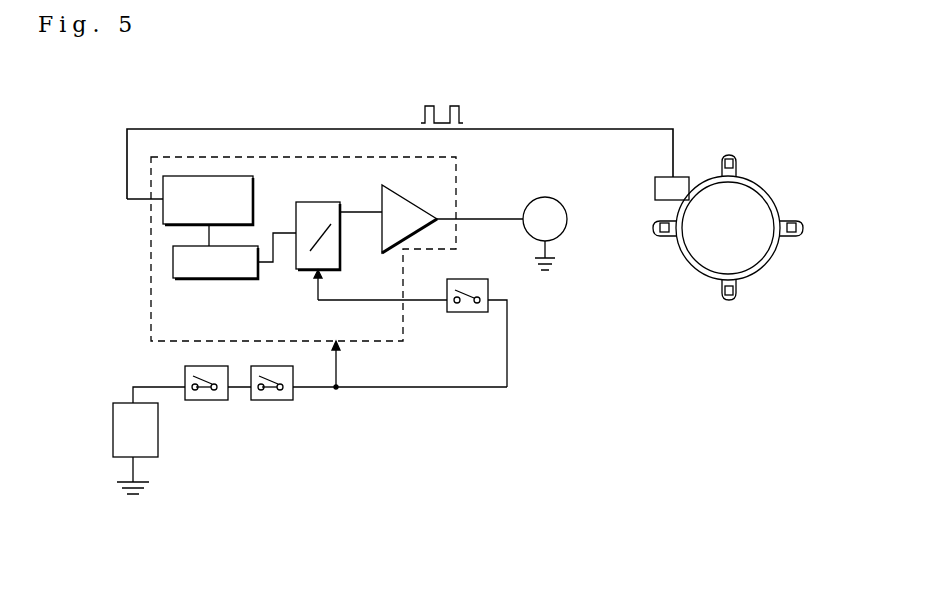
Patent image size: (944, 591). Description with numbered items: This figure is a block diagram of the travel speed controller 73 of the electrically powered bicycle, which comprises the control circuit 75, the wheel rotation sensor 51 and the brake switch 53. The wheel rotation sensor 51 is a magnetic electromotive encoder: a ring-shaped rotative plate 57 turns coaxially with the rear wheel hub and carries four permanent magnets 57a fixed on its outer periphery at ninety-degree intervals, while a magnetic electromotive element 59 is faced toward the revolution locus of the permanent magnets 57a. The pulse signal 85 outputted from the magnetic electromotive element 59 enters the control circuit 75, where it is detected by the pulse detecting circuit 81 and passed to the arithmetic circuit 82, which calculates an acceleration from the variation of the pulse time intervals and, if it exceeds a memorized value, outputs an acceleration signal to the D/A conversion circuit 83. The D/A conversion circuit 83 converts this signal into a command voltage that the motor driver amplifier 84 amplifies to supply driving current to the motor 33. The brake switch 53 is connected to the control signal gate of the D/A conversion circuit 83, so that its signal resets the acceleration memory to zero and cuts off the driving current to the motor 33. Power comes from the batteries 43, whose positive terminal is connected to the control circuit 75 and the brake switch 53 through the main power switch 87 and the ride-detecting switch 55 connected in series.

The pulse signal 85 is at (463, 110).
The control circuit 75 is at (148, 306).
The pulse detecting circuit 81 is at (257, 190).
The arithmetic circuit 82 is at (192, 280).
The D/A conversion circuit 83 is at (328, 213).
The motor driver amplifier 84 is at (413, 209).
The motor 33 is at (545, 197).
The brake switch 53 is at (482, 284).
The batteries 43 is at (155, 438).
The main power switch 87 is at (206, 400).
The ride-detecting switch 55 is at (273, 400).
The travel speed controller 73 is at (583, 347).
The rotative plate 57 is at (702, 177).
The permanent magnets 57a is at (737, 163).
The magnetic electromotive element 59 is at (680, 177).
The wheel rotation sensor 51 is at (748, 43).